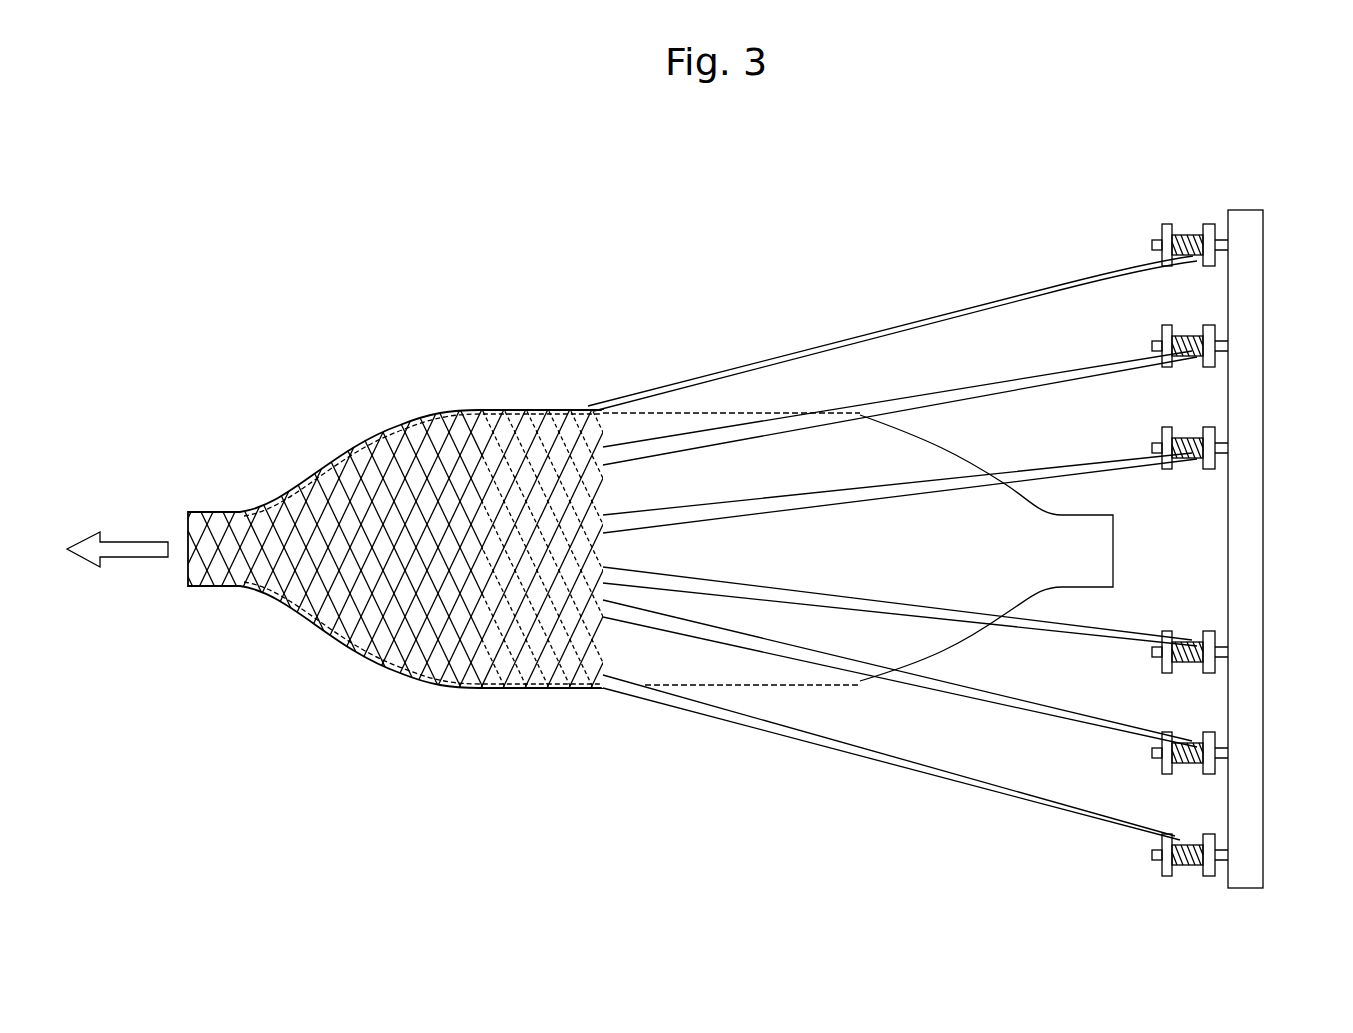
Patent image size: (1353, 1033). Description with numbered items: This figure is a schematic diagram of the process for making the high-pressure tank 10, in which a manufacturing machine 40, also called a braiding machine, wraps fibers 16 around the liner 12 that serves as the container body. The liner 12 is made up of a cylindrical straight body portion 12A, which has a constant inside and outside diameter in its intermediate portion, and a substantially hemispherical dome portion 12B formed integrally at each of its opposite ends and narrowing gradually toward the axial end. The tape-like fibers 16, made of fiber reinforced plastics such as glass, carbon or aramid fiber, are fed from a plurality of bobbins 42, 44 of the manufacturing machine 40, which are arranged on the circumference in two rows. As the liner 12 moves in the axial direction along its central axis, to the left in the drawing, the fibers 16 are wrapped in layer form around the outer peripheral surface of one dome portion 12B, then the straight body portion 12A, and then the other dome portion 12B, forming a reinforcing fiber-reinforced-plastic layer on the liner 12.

The high-pressure tank 10 is at (346, 418).
The liner 12 is at (755, 409).
The straight body portion 12A is at (688, 412).
The dome portion 12B is at (360, 657).
The fibers 16 is at (990, 303).
The manufacturing machine 40 is at (1267, 183).
The bobbin 42 is at (1192, 234).
The bobbin 44 is at (1193, 868).